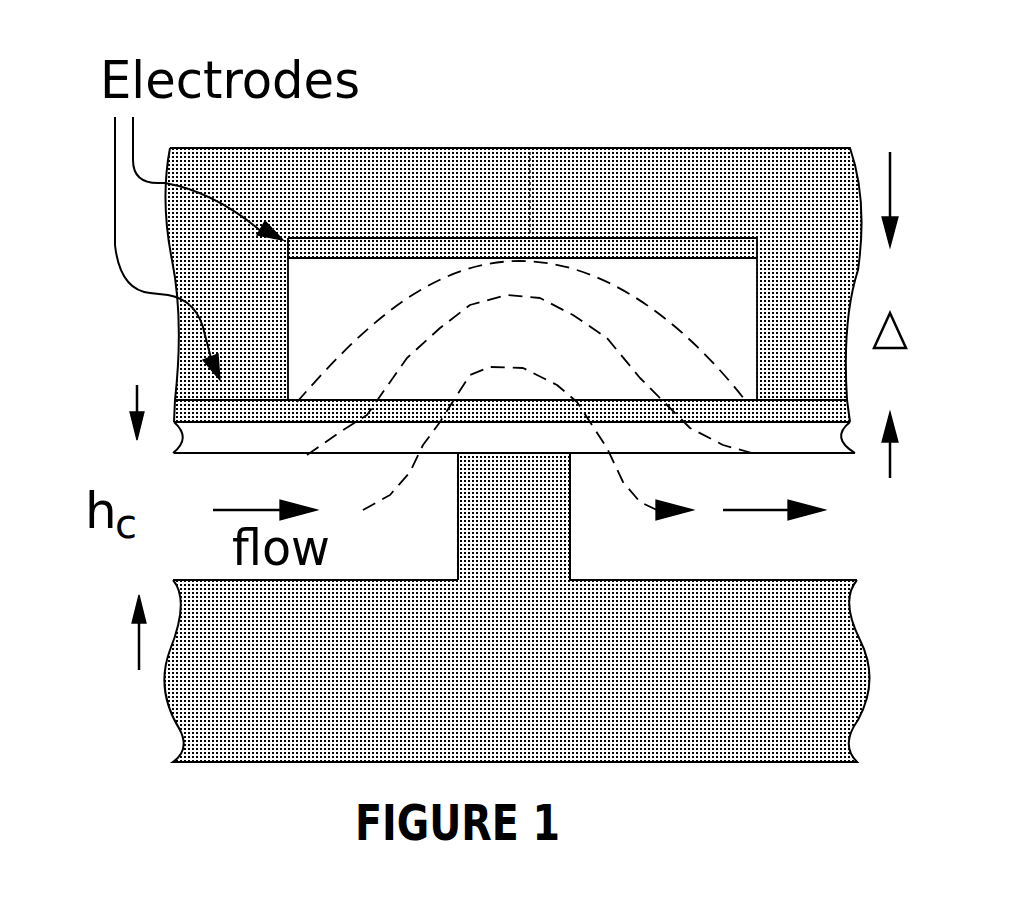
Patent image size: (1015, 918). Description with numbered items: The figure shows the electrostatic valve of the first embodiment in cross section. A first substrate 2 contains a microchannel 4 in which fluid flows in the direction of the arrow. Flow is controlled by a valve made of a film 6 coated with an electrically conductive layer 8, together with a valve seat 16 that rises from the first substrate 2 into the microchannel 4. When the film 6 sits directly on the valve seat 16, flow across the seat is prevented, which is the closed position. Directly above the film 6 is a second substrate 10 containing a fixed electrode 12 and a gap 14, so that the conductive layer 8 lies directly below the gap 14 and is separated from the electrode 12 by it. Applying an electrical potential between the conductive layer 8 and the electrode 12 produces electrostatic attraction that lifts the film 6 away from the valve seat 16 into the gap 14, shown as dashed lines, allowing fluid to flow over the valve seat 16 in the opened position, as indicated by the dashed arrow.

The first substrate 2 is at (217, 682).
The microchannel 4 is at (750, 540).
The film 6 is at (812, 433).
The electrically conductive layer 8 is at (193, 403).
The second substrate 10 is at (600, 187).
The fixed electrode 12 is at (405, 242).
The gap 14 is at (680, 277).
The valve seat 16 is at (500, 512).